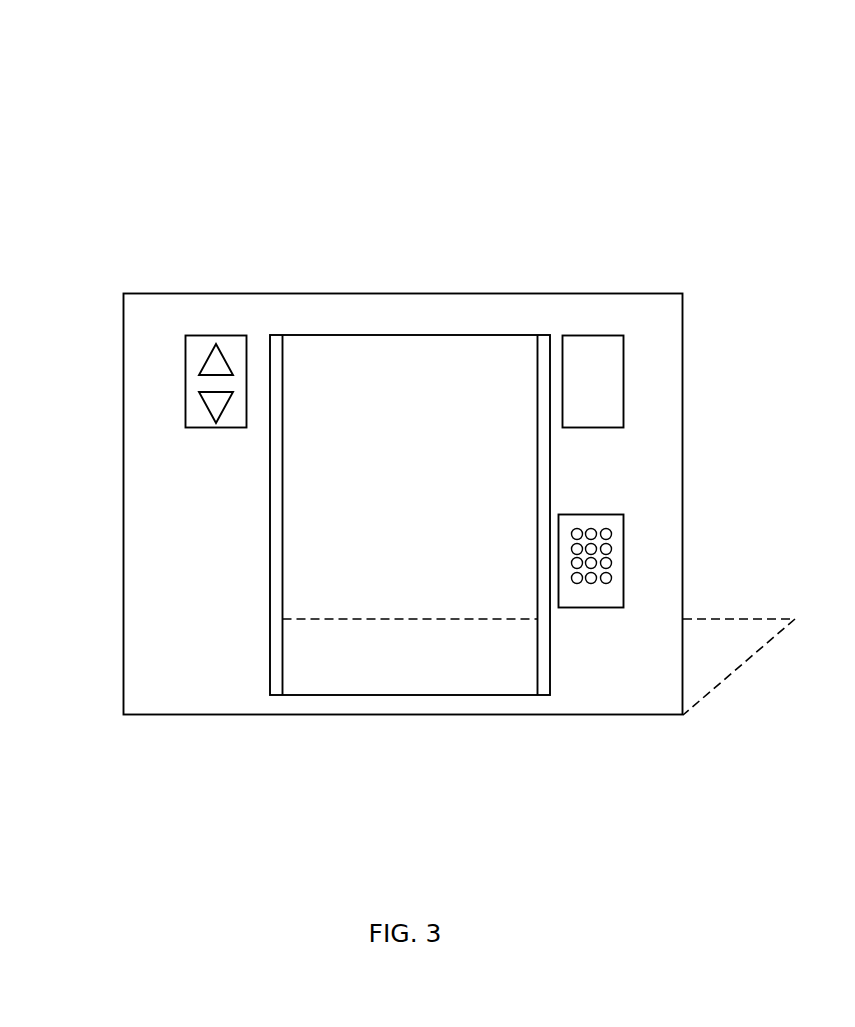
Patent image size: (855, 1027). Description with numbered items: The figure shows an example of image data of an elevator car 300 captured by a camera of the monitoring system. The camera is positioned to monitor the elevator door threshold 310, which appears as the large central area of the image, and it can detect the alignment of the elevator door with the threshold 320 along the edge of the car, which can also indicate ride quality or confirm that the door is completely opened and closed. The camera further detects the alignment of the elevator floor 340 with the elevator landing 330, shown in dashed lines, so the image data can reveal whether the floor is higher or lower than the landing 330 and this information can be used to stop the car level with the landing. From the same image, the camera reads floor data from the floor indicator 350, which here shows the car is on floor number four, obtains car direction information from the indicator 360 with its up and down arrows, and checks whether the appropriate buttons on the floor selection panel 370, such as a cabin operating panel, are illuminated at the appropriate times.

The elevator car 300 is at (424, 48).
The elevator door threshold 310 is at (398, 333).
The threshold 320 is at (272, 523).
The elevator landing 330 is at (757, 619).
The elevator floor 340 is at (340, 687).
The floor indicator 350 is at (615, 402).
The indicator 360 is at (185, 383).
The floor selection panel 370 is at (618, 558).